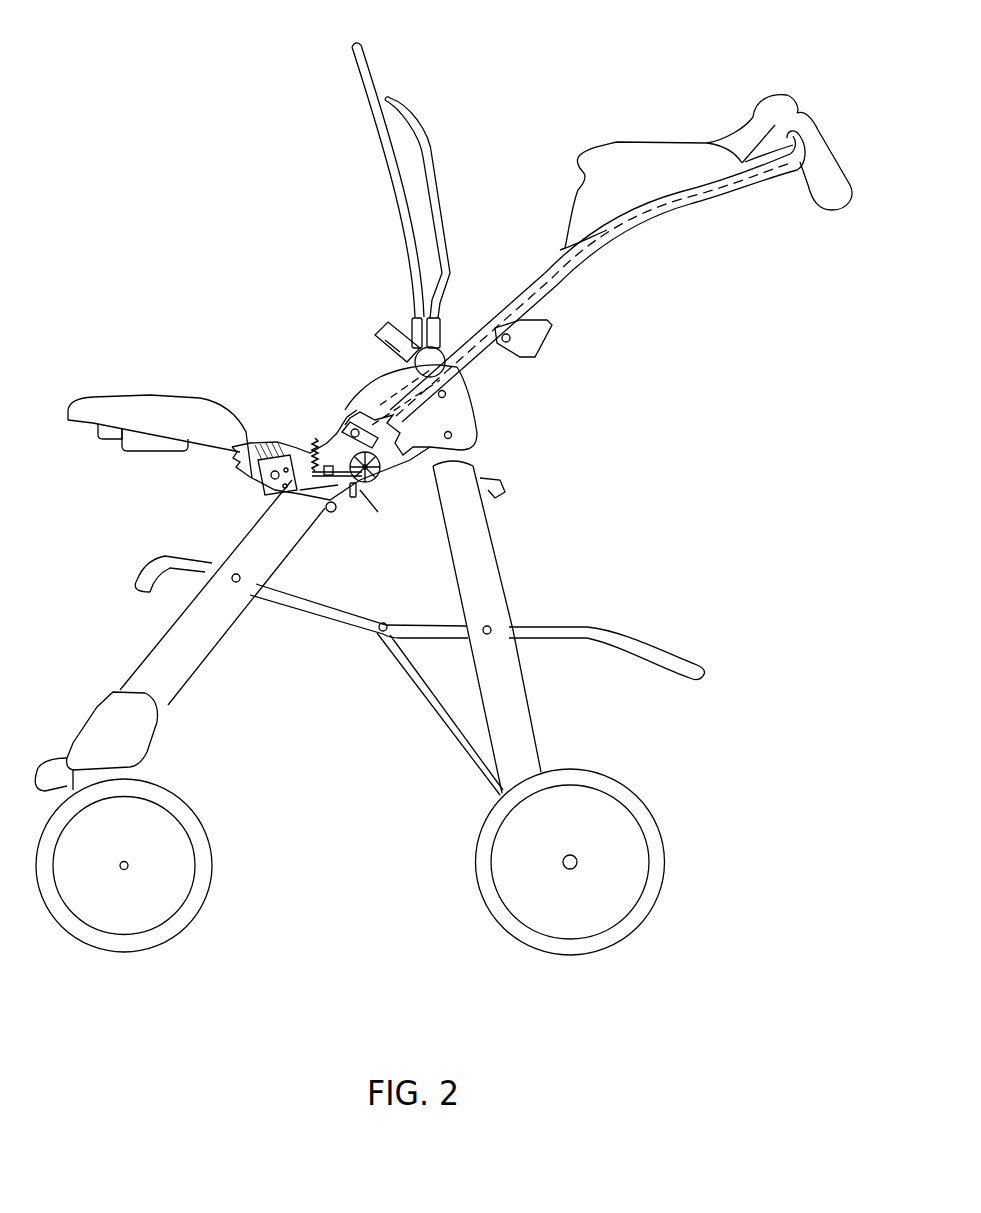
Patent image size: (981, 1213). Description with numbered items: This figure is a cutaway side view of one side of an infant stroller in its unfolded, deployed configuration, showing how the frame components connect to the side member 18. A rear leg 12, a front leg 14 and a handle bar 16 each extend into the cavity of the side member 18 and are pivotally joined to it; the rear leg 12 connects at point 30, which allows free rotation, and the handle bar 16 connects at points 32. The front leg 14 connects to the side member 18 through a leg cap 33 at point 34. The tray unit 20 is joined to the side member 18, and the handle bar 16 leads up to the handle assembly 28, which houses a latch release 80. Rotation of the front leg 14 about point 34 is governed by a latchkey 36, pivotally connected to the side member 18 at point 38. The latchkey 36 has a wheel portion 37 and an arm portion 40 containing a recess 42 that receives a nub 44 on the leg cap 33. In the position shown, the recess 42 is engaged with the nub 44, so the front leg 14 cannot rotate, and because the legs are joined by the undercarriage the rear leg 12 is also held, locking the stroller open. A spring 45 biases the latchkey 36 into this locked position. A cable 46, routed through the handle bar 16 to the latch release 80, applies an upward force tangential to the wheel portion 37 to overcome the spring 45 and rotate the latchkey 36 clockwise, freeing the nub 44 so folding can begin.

The rear leg 12 is at (500, 568).
The front leg 14 is at (230, 545).
The handle bar 16 is at (540, 290).
The side member 18 is at (382, 377).
The tray unit 20 is at (78, 398).
The handle assembly 28 is at (787, 97).
The attachment point of rear leg 30 is at (452, 436).
The attachment points of handle bar 32 is at (445, 396).
The leg cap 33 is at (318, 512).
The attachment point of front leg 34 is at (332, 513).
The latchkey 36 is at (372, 507).
The wheel portion 37 is at (380, 490).
The attachment point of latchkey 38 is at (378, 476).
The arm portion 40 is at (330, 462).
The recess 42 is at (316, 438).
The nub 44 is at (338, 485).
The spring 45 is at (310, 440).
The cable 46 is at (567, 273).
The latch release 80 is at (760, 140).